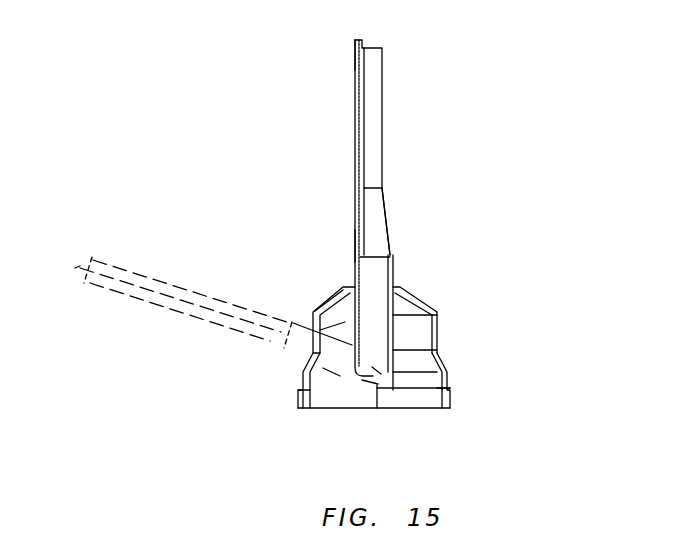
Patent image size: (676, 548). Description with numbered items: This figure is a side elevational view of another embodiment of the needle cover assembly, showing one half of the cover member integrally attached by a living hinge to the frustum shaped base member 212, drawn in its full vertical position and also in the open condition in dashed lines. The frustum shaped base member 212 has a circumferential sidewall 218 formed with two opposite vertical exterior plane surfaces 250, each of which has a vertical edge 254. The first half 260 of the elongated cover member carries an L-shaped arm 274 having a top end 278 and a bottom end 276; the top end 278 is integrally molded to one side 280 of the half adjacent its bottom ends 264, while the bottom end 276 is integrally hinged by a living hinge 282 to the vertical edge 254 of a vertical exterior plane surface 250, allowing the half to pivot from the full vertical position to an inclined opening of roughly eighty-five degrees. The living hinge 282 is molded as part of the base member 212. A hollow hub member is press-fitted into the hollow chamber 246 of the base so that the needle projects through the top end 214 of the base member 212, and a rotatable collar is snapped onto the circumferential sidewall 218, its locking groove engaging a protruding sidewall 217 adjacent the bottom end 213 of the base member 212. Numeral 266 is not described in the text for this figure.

The first half 260 is at (392, 77).
The end of contact strip 266 is at (358, 43).
The side 280 is at (362, 155).
The bottom ends 264 is at (356, 255).
The top end 278 is at (385, 248).
The frustum shaped base member 212 is at (425, 428).
The circumferential sidewall 218 is at (330, 308).
The L-shaped arm 274 is at (395, 287).
The top end 214 is at (395, 288).
The vertical edge 254 is at (440, 328).
The bottom end 276 is at (396, 349).
The living hinge 282 is at (448, 382).
The protruding sidewall 217 is at (452, 403).
The hollow chamber 246 is at (357, 410).
The bottom end 213 is at (303, 407).
The vertical exterior plane surface 250 is at (315, 338).